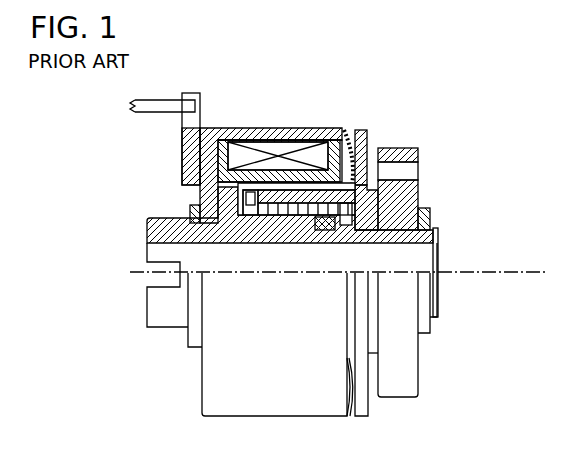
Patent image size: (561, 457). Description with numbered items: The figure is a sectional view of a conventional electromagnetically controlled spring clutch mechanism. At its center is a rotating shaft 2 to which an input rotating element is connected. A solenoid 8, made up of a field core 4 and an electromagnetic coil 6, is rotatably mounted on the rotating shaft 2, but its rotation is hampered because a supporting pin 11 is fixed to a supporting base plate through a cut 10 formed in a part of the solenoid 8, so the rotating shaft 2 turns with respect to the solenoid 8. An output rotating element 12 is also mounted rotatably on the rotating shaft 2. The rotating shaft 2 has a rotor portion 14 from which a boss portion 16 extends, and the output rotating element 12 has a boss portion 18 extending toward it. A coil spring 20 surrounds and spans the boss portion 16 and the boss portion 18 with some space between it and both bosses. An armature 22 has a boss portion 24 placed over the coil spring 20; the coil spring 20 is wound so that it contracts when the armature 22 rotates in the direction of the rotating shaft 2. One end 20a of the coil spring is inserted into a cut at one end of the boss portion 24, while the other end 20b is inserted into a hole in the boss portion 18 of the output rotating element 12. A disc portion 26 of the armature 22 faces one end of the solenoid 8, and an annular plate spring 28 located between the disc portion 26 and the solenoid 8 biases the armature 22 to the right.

The rotating shaft 2 is at (160, 226).
The field core 4 is at (290, 128).
The electromagnetic coil 6 is at (313, 150).
The solenoid 8 is at (228, 124).
The cut 10 is at (186, 124).
The supporting pin 11 is at (155, 104).
The output rotating element 12 is at (420, 206).
The rotor portion 14 is at (205, 203).
The boss portion 16 is at (262, 226).
The boss portion 18 is at (322, 232).
The coil spring 20 is at (285, 214).
The one end of the coil spring 20a is at (242, 214).
The other end of the coil spring 20b is at (432, 218).
The armature 22 is at (370, 126).
The boss portion 24 is at (283, 184).
The disc portion 26 is at (352, 220).
The annular plate spring 28 is at (350, 134).